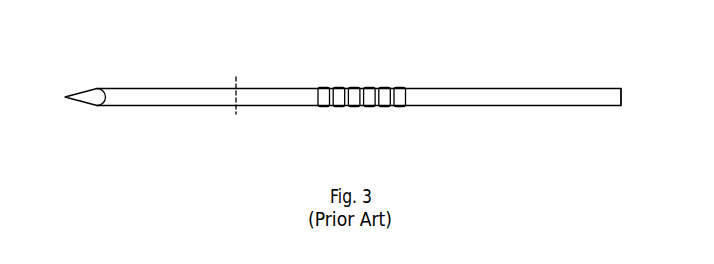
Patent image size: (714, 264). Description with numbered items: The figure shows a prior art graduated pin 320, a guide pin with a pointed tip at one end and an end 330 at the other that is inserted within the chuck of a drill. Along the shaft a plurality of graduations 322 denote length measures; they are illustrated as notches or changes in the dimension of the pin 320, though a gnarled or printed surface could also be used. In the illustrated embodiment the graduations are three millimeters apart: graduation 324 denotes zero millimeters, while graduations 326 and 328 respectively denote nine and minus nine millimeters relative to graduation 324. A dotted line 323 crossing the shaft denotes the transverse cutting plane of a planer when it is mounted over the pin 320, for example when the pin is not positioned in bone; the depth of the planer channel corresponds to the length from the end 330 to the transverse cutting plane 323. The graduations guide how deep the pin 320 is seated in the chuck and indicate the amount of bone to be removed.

The graduated pin 320 is at (208, 63).
The graduations 322 is at (360, 93).
The dotted line denoting transverse cutting plane 323 is at (236, 116).
The graduation denoting 0 mm 324 is at (363, 107).
The graduation denoting 9 mm 326 is at (400, 107).
The graduation denoting −9 mm 328 is at (318, 107).
The end of the pin 330 is at (621, 106).